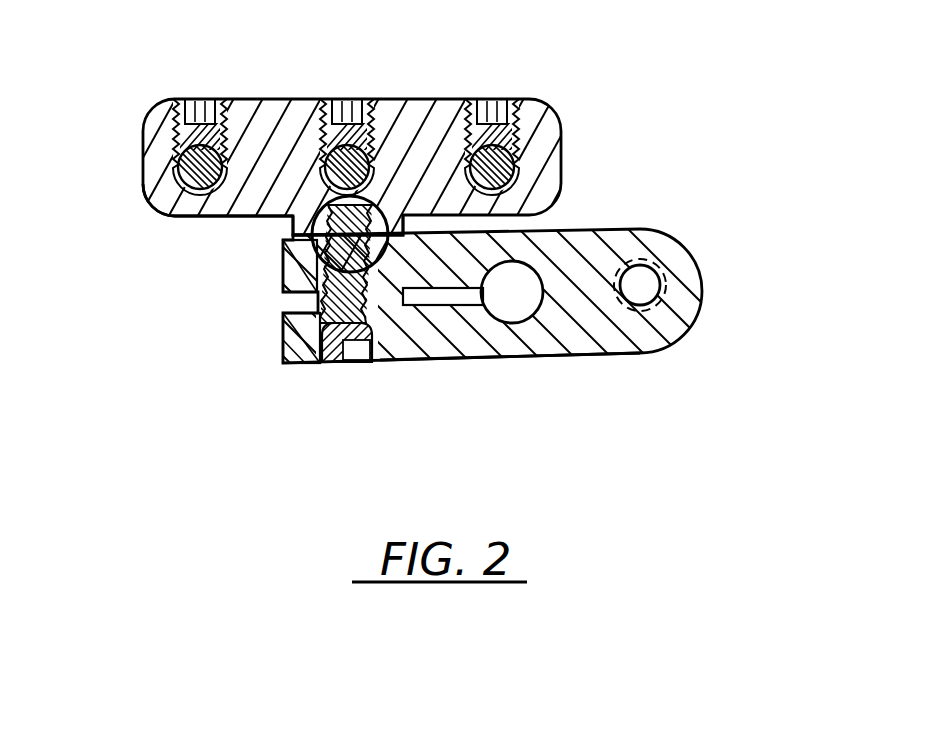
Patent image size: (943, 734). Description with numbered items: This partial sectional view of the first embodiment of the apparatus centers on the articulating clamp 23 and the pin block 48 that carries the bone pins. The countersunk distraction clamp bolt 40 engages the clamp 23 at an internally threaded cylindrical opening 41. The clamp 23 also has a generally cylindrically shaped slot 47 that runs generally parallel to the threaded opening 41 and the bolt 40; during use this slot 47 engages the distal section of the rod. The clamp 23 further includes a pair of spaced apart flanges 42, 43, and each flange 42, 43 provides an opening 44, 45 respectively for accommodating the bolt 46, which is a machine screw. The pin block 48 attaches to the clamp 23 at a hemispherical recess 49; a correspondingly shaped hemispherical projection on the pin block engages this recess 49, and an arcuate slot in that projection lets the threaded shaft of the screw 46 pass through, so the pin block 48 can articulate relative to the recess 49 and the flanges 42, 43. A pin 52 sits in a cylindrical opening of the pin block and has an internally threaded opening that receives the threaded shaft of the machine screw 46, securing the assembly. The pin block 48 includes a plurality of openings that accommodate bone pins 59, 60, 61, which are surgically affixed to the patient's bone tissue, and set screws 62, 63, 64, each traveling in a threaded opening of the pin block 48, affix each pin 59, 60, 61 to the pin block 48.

The articulating clamp 23 is at (668, 233).
The countersunk distraction clamp bolt 40 is at (643, 290).
The internally threaded cylindrical opening 41 is at (700, 256).
The flange 42 is at (508, 232).
The flange 43 is at (470, 358).
The opening 44 is at (282, 338).
The opening 45 is at (326, 288).
The bolt 46 is at (393, 362).
The cylindrically shaped slot 47 is at (517, 298).
The pin block 48 is at (177, 112).
The hemispherical recess 49 is at (283, 253).
The pin 52 is at (382, 206).
The bone pin 59 is at (150, 213).
The bone pin 60 is at (321, 208).
The bone pin 61 is at (525, 150).
The set screw 62 is at (205, 99).
The set screw 63 is at (373, 99).
The set screw 64 is at (512, 98).